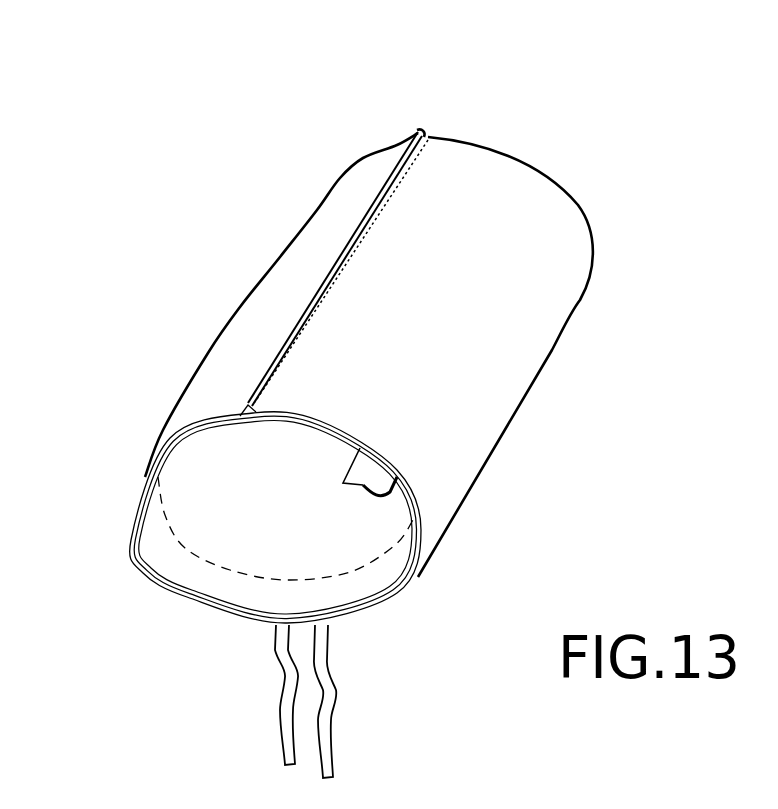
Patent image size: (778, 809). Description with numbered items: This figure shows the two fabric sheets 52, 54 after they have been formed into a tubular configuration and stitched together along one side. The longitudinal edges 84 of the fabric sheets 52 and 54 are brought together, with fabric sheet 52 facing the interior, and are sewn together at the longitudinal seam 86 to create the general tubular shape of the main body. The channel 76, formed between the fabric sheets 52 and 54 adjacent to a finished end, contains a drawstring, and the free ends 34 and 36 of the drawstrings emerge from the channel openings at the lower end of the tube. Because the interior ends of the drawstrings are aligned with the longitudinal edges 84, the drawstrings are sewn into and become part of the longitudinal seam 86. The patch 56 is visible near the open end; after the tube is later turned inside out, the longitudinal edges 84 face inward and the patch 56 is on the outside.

The free end 34 is at (280, 710).
The free end 36 is at (335, 698).
The fabric sheet 52 is at (400, 522).
The fabric sheet 54 is at (457, 487).
The patch 56 is at (395, 481).
The channel 76 is at (168, 525).
The longitudinal edges 84 is at (412, 131).
The longitudinal seam 86 is at (430, 139).